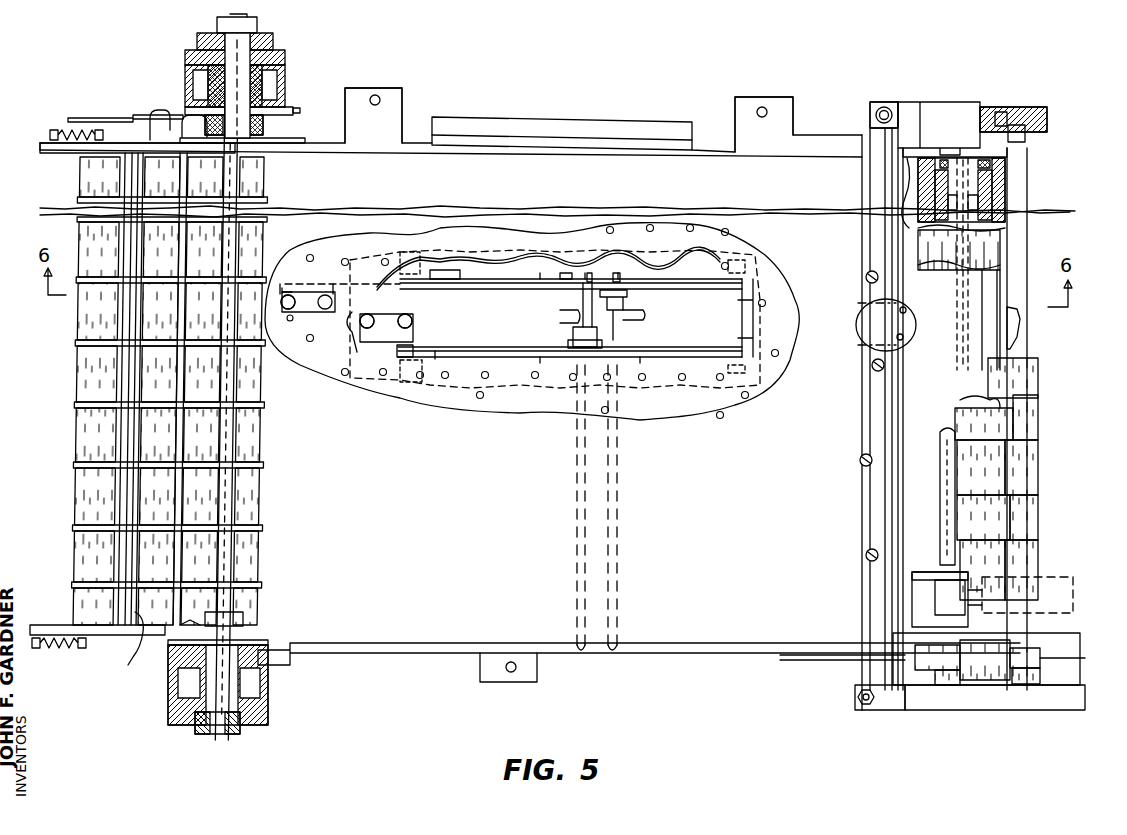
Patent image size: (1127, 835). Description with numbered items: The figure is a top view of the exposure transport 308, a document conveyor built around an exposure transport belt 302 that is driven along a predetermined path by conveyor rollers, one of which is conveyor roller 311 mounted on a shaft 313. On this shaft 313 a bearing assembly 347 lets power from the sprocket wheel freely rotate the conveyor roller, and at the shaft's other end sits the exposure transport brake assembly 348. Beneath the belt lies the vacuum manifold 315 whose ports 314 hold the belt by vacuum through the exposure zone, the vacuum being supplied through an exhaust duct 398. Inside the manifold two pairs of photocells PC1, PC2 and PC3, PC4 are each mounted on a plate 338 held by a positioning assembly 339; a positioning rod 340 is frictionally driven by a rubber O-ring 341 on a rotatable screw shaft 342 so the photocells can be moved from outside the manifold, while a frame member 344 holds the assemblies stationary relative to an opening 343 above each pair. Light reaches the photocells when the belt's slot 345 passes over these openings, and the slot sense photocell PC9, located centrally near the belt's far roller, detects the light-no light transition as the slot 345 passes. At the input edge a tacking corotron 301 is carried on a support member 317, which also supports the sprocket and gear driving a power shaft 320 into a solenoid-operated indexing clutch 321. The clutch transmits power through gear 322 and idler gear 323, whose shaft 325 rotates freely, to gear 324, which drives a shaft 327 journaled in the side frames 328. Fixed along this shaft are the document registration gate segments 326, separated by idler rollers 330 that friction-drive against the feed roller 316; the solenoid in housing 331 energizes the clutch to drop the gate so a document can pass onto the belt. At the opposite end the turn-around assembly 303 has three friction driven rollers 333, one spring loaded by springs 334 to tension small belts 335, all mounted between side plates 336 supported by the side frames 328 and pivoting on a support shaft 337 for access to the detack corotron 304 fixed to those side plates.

The corotron 301 is at (868, 248).
The exposure transport belt 302 is at (712, 648).
The turn-around assembly 303 is at (168, 390).
The detack corotron 304 is at (152, 627).
The exposure transport 308 is at (417, 663).
The conveyor roller 311 is at (214, 626).
The shaft 313 is at (283, 86).
The ports 314 is at (546, 378).
The vacuum manifold 315 is at (752, 390).
The feed roller 316 is at (1000, 420).
The support member 317 is at (906, 116).
The power shaft 320 is at (923, 450).
The indexing clutch 321 is at (924, 570).
The gear 322 is at (863, 660).
The idler gear 323 is at (992, 682).
The gear 324 is at (1055, 658).
The shaft 325 is at (950, 692).
The document registration gate segments 326 is at (1030, 473).
The shaft 327 is at (1030, 125).
The side frames 328 is at (393, 116).
The idler rollers 330 is at (1020, 517).
The housing 331 is at (1036, 580).
The friction driven rollers 333 is at (82, 446).
The springs 334 is at (68, 124).
The small belts 335 is at (260, 427).
The side plates 336 is at (116, 136).
The support shaft 337 is at (232, 501).
The plate 338 is at (410, 332).
The positioning assembly 339 is at (639, 310).
The positioning rod 340 is at (513, 345).
The rubber O-ring 341 is at (625, 290).
The screw shaft 342 is at (615, 498).
The opening 343 is at (300, 287).
The frame member 344 is at (738, 290).
The slot 345 is at (848, 308).
The bearing assembly 347 is at (242, 78).
The exposure transport brake assembly 348 is at (227, 673).
The exhaust duct 398 is at (196, 54).
The photocell PC1 is at (405, 316).
The photocell PC2 is at (343, 330).
The photocell PC3 is at (326, 307).
The photocell PC4 is at (335, 285).
The slot sense photocell PC9 is at (1020, 333).